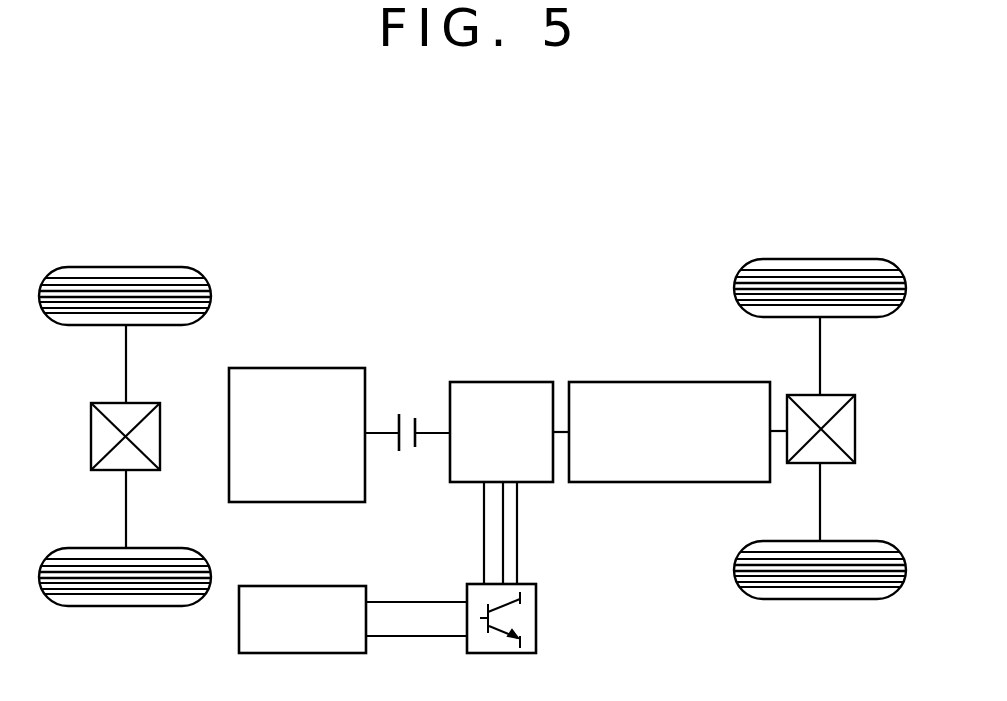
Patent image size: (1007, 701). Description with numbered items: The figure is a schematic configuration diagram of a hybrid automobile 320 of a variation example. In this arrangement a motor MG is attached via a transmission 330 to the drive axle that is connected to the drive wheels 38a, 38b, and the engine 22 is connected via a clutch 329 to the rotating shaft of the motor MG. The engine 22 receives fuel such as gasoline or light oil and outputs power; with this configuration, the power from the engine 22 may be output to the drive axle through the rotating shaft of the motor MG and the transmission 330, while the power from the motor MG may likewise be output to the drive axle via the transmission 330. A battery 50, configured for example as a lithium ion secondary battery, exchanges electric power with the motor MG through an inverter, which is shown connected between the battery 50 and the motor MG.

The hybrid automobile 320 is at (600, 199).
The engine 22 is at (297, 367).
The clutch 329 is at (407, 412).
The motor MG is at (500, 381).
The transmission 330 is at (670, 381).
The drive wheel 38a is at (820, 259).
The drive wheel 38b is at (820, 599).
The battery 50 is at (299, 585).